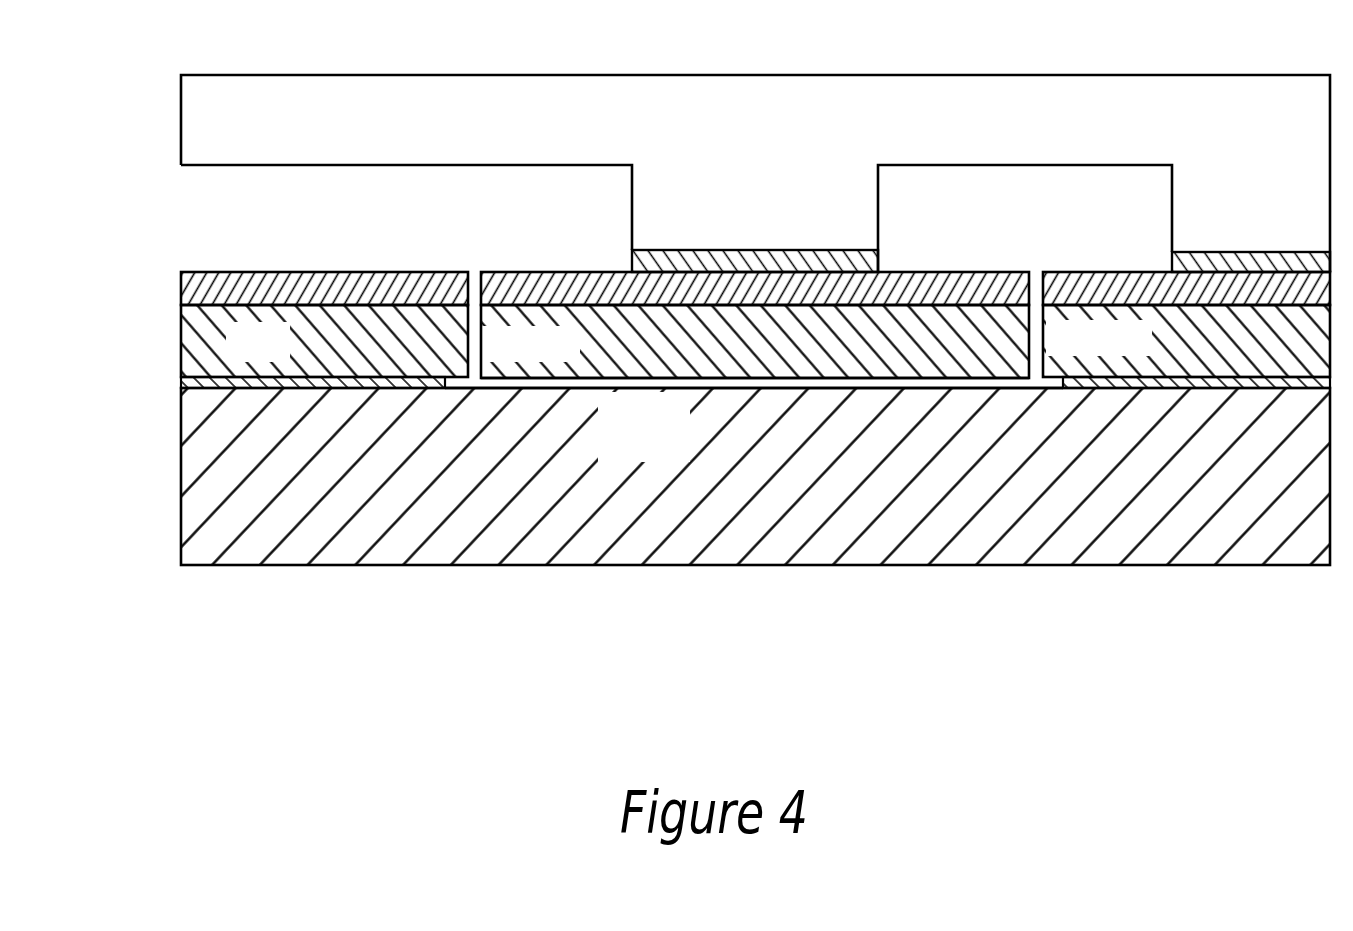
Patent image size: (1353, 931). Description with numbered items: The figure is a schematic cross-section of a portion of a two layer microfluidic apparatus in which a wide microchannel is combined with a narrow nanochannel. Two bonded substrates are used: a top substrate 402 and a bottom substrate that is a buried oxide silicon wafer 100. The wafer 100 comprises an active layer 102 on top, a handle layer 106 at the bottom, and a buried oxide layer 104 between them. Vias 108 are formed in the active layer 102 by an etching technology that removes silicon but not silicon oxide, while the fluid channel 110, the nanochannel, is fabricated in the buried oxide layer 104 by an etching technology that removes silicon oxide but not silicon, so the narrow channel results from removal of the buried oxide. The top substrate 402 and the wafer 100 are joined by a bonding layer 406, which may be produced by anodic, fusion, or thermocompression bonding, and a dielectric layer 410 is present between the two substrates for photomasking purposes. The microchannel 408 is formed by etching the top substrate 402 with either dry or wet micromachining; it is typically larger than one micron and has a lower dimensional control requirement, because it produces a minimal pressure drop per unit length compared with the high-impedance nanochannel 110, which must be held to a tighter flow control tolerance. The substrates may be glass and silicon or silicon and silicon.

The wafer 100 is at (701, 420).
The active layer 102 is at (282, 357).
The buried oxide layer 104 is at (187, 385).
The handle layer 106 is at (727, 547).
The vias 108 is at (473, 342).
The fluid channel 110 is at (600, 383).
The top substrate 402 is at (283, 136).
The bonding layer 406 is at (783, 250).
The microchannel 408 is at (415, 237).
The dielectric layer 410 is at (293, 287).